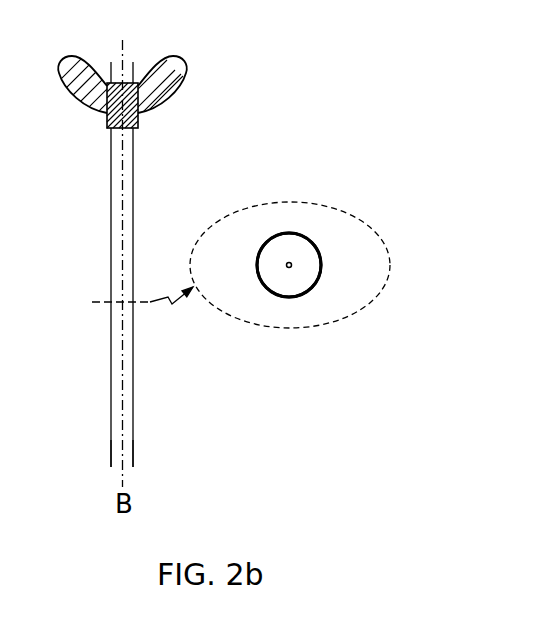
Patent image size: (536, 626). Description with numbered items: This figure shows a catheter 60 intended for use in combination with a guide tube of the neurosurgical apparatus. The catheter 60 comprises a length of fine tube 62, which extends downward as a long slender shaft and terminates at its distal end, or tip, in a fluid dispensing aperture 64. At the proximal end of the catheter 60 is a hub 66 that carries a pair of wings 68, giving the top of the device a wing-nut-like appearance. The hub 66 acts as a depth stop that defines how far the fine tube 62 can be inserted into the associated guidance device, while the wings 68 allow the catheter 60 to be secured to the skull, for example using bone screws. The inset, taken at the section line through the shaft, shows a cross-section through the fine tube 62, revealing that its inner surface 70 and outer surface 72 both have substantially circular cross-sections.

The catheter 60 is at (58, 368).
The fine tube 62 is at (135, 233).
The fluid dispensing aperture 64 is at (115, 465).
The hub 66 is at (137, 118).
The wings 68 is at (77, 62).
The inner surface 70 is at (275, 240).
The outer surface 72 is at (308, 235).